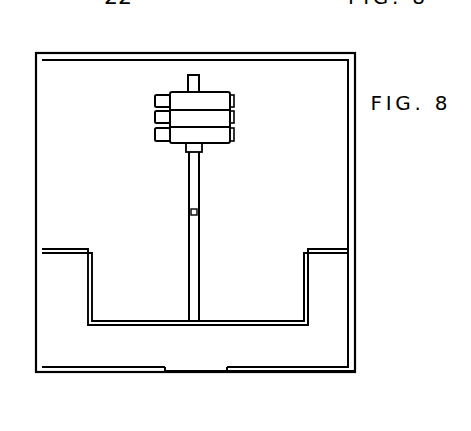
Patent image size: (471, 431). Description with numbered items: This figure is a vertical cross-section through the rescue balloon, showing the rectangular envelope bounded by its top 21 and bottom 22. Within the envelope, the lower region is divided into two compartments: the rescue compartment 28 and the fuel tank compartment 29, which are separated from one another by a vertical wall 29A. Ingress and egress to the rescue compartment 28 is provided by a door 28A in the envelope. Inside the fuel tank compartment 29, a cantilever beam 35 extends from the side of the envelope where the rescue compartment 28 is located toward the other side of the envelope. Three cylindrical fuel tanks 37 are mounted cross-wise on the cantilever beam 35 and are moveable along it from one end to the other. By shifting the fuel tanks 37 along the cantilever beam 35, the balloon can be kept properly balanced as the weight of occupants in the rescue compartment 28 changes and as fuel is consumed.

The top 21 is at (199, 53).
The bottom 22 is at (281, 373).
The rescue compartment 28 is at (215, 353).
The door 28A is at (182, 373).
The fuel tank compartment 29 is at (311, 165).
The vertical wall 29A is at (265, 321).
The cantilever beam 35 is at (191, 189).
The fuel tanks 37 is at (155, 135).